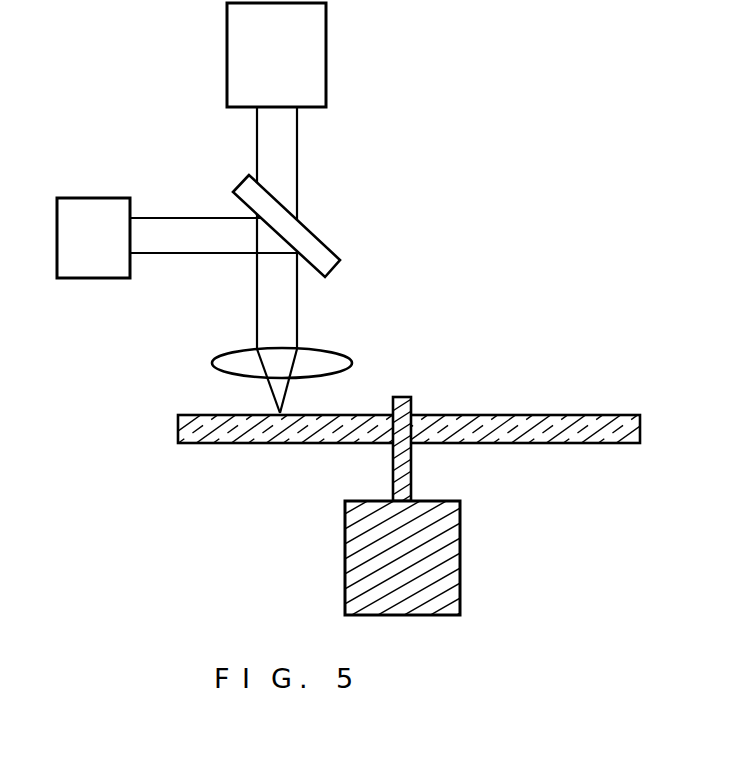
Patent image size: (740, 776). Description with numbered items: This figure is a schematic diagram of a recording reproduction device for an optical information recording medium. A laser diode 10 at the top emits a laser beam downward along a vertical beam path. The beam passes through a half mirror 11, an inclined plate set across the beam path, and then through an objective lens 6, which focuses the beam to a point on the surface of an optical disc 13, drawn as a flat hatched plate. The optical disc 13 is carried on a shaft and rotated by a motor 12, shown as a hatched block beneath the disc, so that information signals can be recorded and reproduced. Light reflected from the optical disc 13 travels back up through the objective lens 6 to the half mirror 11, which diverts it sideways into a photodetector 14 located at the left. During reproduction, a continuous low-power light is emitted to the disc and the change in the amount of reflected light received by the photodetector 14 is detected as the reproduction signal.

The laser diode 10 is at (316, 58).
The half mirror 11 is at (317, 250).
The photodetector 14 is at (86, 273).
The objective lens 6 is at (334, 350).
The optical disc 13 is at (495, 413).
The motor 12 is at (455, 558).